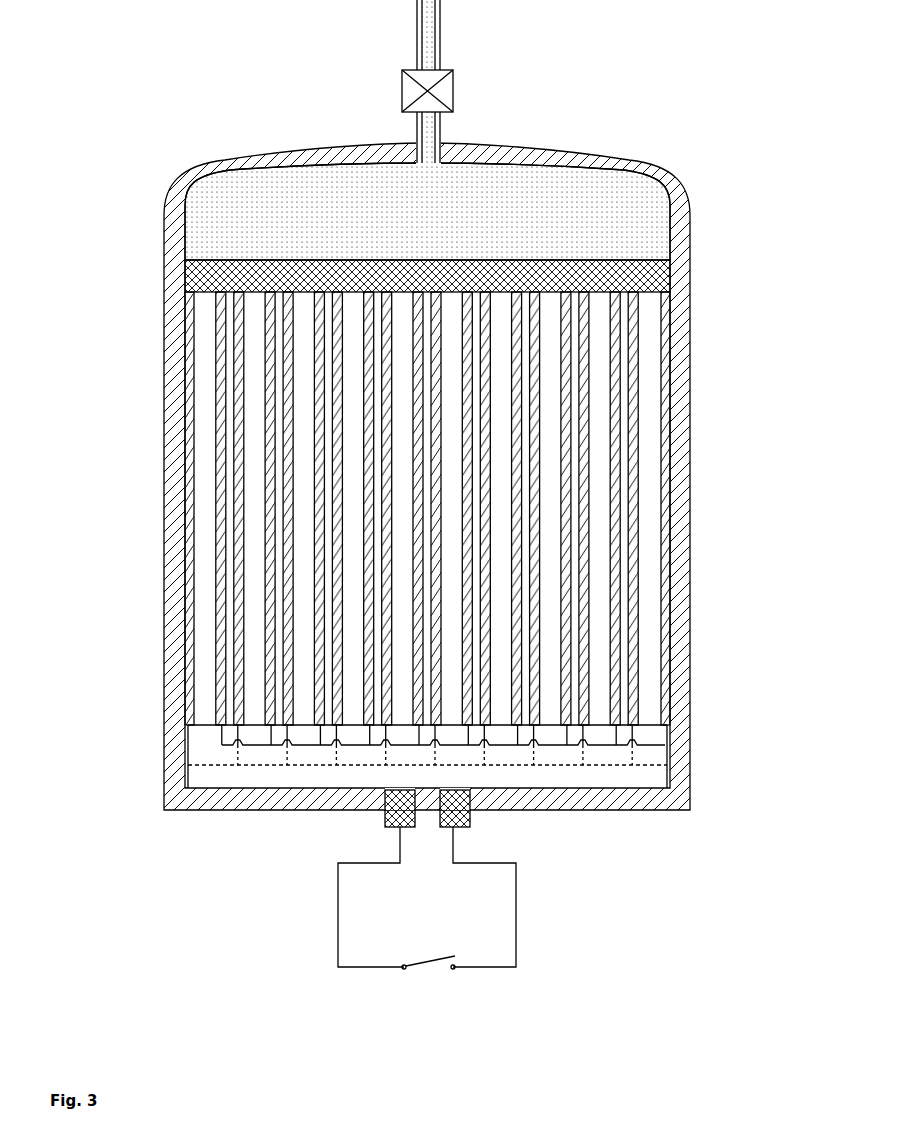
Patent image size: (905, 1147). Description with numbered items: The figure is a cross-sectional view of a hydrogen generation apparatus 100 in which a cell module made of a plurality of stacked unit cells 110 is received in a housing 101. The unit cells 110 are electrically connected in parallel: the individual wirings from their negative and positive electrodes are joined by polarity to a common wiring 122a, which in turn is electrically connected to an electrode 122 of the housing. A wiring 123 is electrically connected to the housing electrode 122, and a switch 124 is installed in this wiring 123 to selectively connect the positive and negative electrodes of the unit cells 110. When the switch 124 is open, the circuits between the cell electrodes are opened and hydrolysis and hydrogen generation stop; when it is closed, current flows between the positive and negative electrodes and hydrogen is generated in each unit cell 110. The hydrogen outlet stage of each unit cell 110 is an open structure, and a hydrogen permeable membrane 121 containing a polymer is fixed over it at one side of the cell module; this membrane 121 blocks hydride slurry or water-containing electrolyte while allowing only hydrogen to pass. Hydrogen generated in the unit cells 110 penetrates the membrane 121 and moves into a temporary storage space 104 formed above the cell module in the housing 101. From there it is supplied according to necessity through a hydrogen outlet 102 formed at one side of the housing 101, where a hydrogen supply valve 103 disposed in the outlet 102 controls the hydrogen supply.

The heat exchanger apparatus 100 is at (477, 519).
The housing 101 is at (682, 458).
The hydrogen outlet 102 is at (413, 32).
The hydrogen supply valve 103 is at (402, 90).
The temporary storage space 104 is at (536, 180).
The unit cells 110 is at (555, 731).
The hydrogen permeable membrane 121 is at (690, 272).
The electrode 122 is at (383, 817).
The common wiring 122a is at (312, 747).
The wiring 123 is at (338, 943).
The switch 124 is at (430, 962).